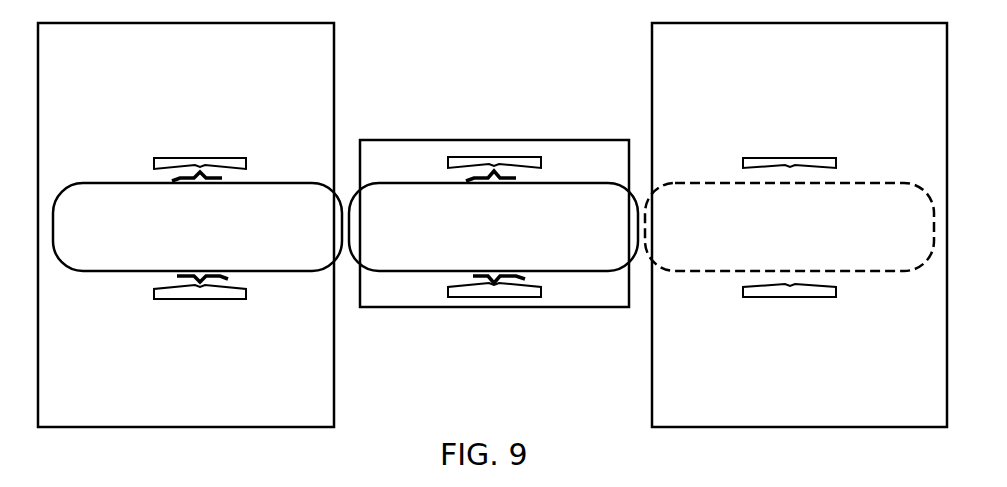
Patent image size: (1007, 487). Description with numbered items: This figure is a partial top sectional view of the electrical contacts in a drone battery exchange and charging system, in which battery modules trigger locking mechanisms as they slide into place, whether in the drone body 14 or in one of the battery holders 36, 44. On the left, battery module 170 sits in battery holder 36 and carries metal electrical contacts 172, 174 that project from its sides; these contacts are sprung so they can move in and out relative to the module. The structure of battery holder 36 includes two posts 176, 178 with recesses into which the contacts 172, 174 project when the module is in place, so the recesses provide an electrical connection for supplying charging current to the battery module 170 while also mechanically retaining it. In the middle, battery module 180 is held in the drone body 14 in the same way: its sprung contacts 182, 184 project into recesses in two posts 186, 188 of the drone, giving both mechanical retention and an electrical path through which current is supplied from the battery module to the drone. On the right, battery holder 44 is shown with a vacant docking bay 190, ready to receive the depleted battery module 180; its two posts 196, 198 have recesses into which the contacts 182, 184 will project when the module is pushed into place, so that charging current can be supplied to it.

The drone body 14 is at (390, 140).
The battery holder 36 is at (333, 67).
The battery holder 44 is at (652, 82).
The battery module 170 is at (105, 273).
The electrical contact 172 is at (188, 184).
The electrical contact 174 is at (187, 272).
The post 176 is at (228, 157).
The post 178 is at (223, 300).
The battery module 180 is at (408, 272).
The electrical contact 182 is at (483, 184).
The electrical contact 184 is at (482, 270).
The post 186 is at (475, 157).
The post 188 is at (525, 297).
The docking bay 190 is at (887, 268).
The post 196 is at (805, 158).
The post 198 is at (787, 298).